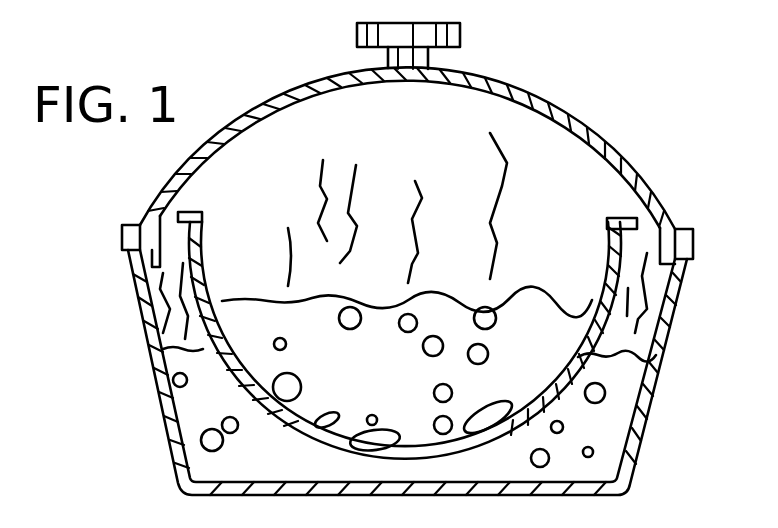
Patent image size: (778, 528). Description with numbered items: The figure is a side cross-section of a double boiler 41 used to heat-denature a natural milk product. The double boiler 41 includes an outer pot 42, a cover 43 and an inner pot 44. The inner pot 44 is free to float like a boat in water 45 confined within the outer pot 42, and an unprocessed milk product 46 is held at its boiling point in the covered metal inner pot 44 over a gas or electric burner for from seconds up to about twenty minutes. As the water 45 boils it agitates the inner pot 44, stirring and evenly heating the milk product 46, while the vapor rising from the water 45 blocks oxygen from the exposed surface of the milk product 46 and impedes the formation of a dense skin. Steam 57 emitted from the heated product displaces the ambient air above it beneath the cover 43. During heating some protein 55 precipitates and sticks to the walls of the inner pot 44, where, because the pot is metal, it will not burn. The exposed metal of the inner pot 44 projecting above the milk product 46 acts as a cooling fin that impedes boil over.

The double boiler 41 is at (587, 97).
The outer pot 42 is at (150, 310).
The cover 43 is at (285, 100).
The inner pot 44 is at (228, 375).
The water 45 is at (290, 473).
The unprocessed milk product 46 is at (387, 397).
The protein 55 is at (297, 420).
The steam 57 is at (508, 180).